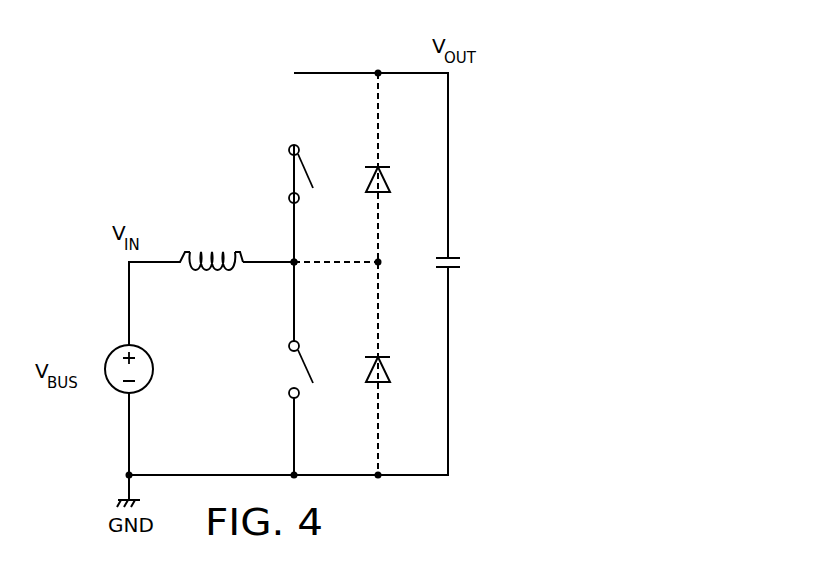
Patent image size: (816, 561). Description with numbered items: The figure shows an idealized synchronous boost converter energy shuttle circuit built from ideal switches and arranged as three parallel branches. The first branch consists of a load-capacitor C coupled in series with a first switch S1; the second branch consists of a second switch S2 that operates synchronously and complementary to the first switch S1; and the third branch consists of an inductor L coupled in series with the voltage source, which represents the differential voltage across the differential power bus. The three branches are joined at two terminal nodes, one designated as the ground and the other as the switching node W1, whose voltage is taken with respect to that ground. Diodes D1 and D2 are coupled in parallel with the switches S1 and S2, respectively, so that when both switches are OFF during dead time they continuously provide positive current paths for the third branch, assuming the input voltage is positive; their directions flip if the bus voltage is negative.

The inductor L is at (212, 247).
The switching node W1 is at (278, 244).
The first switch S1 is at (289, 174).
The second switch S2 is at (289, 369).
The diode D1 is at (394, 183).
The diode D2 is at (394, 374).
The load-capacitor C is at (461, 265).